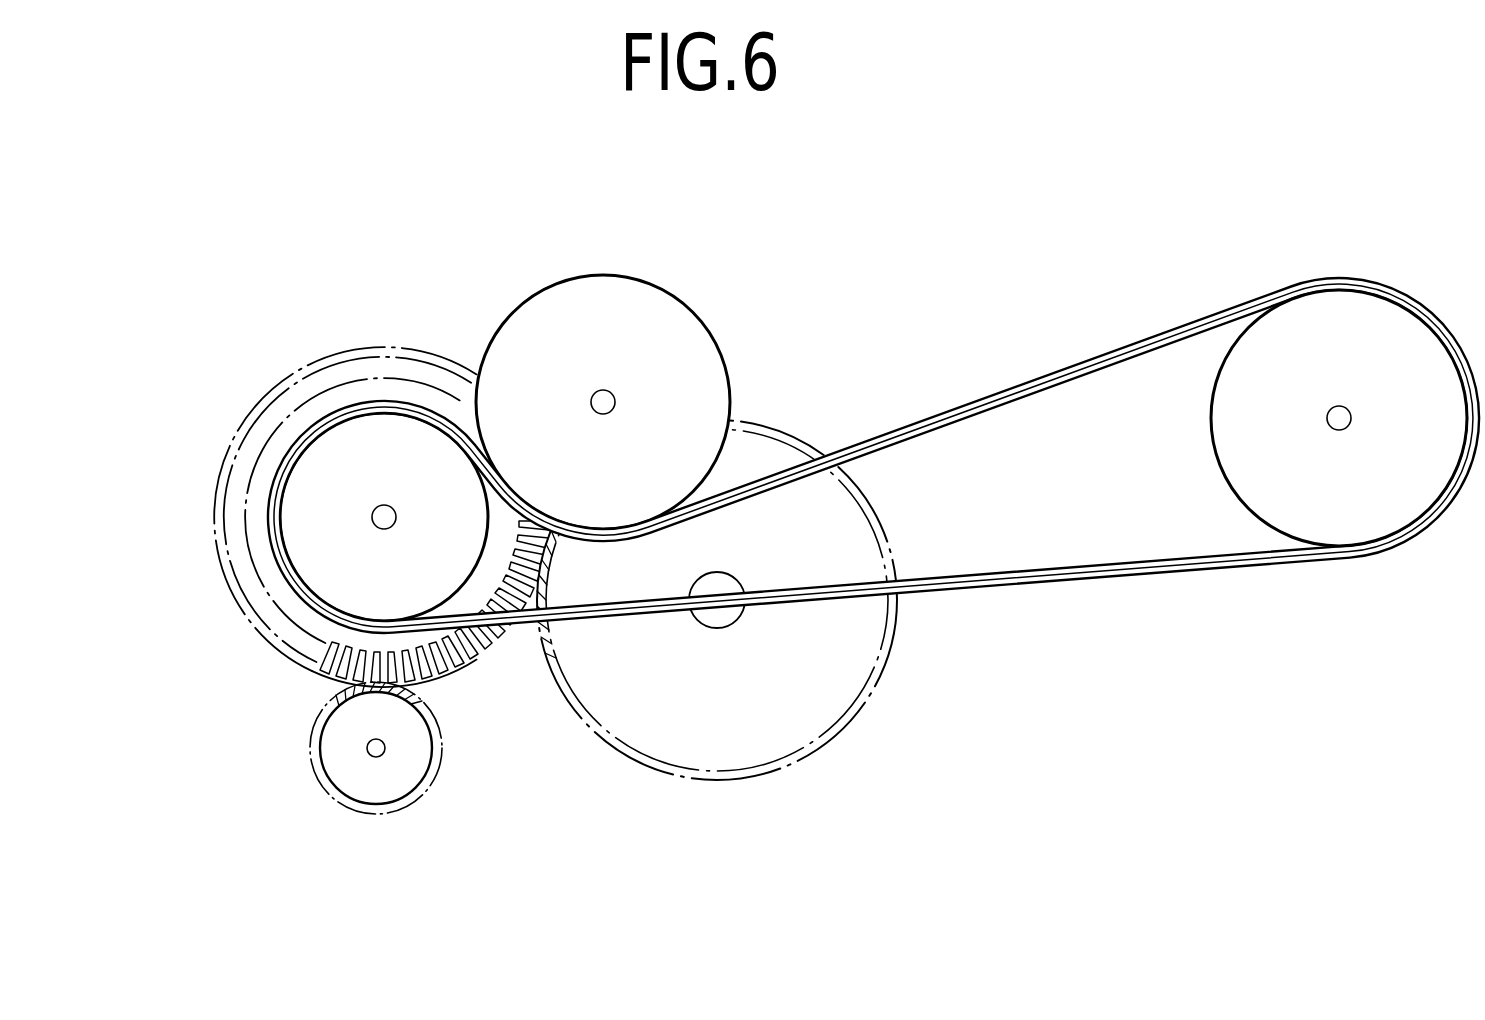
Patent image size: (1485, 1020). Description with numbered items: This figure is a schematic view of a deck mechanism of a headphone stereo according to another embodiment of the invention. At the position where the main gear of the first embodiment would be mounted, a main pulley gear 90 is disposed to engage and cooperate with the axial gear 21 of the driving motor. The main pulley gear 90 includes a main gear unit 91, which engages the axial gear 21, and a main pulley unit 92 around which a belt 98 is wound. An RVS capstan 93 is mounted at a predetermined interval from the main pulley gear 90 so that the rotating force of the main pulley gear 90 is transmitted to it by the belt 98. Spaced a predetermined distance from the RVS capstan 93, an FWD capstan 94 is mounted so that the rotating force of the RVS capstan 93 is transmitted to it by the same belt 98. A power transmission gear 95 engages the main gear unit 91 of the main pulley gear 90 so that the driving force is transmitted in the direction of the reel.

The main pulley gear 90 is at (313, 357).
The main gear unit 91 is at (478, 660).
The main pulley unit 92 is at (295, 513).
The RVS capstan 93 is at (633, 290).
The FWD capstan 94 is at (1355, 298).
The power transmission gear 95 is at (853, 690).
The belt 98 is at (993, 393).
The axial gear 21 is at (325, 788).